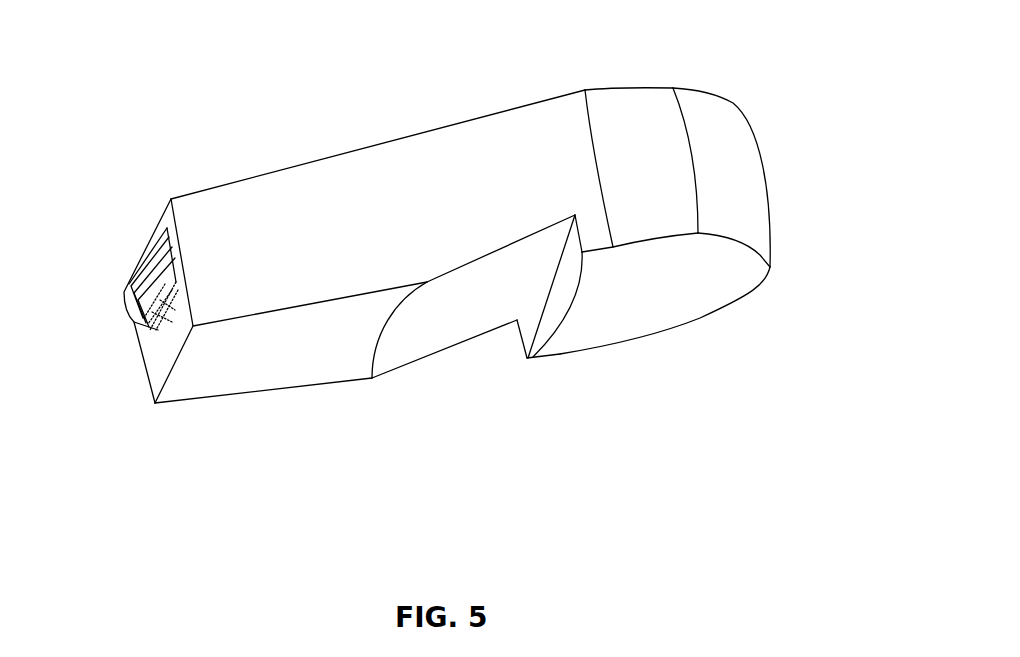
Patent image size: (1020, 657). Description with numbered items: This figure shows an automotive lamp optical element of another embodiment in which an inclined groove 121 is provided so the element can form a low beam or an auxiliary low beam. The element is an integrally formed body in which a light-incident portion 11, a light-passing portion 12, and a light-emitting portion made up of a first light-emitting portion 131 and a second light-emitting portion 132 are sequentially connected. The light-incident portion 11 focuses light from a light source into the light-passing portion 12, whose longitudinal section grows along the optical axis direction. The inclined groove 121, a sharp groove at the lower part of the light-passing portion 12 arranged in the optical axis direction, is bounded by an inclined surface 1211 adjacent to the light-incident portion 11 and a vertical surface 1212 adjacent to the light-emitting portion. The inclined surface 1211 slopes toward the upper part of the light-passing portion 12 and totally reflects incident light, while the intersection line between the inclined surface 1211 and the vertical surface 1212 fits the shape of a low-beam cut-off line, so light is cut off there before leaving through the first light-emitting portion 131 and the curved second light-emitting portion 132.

The light-incident portion 11 is at (148, 350).
The light-passing portion 12 is at (287, 352).
The inclined groove 121 is at (525, 262).
The inclined surface 1211 is at (458, 313).
The vertical surface 1212 is at (543, 317).
The first light-emitting portion 131 is at (662, 210).
The second light-emitting portion 132 is at (752, 210).